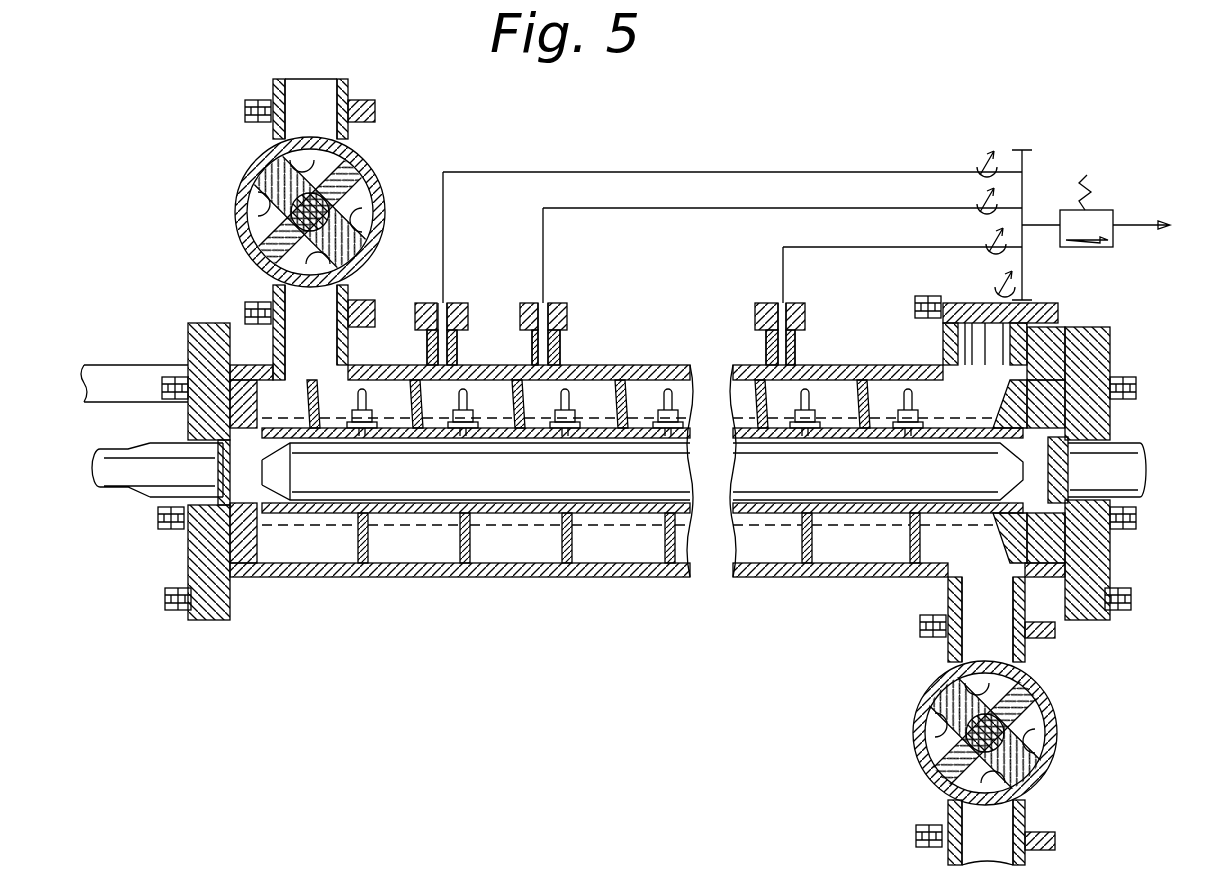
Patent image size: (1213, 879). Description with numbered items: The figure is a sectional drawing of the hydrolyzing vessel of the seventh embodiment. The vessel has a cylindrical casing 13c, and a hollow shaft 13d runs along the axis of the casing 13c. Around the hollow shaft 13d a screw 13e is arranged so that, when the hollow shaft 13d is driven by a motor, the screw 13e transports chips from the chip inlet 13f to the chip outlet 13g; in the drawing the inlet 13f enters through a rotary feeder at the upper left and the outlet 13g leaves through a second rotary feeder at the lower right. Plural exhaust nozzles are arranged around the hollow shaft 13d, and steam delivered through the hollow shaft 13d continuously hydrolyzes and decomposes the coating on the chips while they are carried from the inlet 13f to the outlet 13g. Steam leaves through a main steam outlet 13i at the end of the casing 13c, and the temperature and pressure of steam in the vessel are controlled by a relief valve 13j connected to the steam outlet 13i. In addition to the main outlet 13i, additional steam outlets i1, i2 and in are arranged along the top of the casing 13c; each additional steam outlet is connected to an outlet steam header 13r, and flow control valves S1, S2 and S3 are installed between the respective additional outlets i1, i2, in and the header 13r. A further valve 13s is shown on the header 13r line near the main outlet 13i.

The cylindrical casing 13c is at (643, 547).
The hollow shaft 13d is at (128, 500).
The screw 13e is at (555, 545).
The chip inlet 13f is at (305, 229).
The chip outlet 13g is at (1015, 716).
The main steam outlet 13i is at (980, 303).
The relief valve 13j is at (1113, 210).
The outlet steam header 13r is at (1022, 150).
The control valve 13s is at (1021, 277).
The additional steam outlet i1 is at (444, 303).
The additional steam outlet i2 is at (548, 303).
The injection nozzle in is at (785, 303).
The flow control valve S1 is at (978, 158).
The flow control valve S2 is at (978, 198).
The flow control valve S3 is at (984, 244).